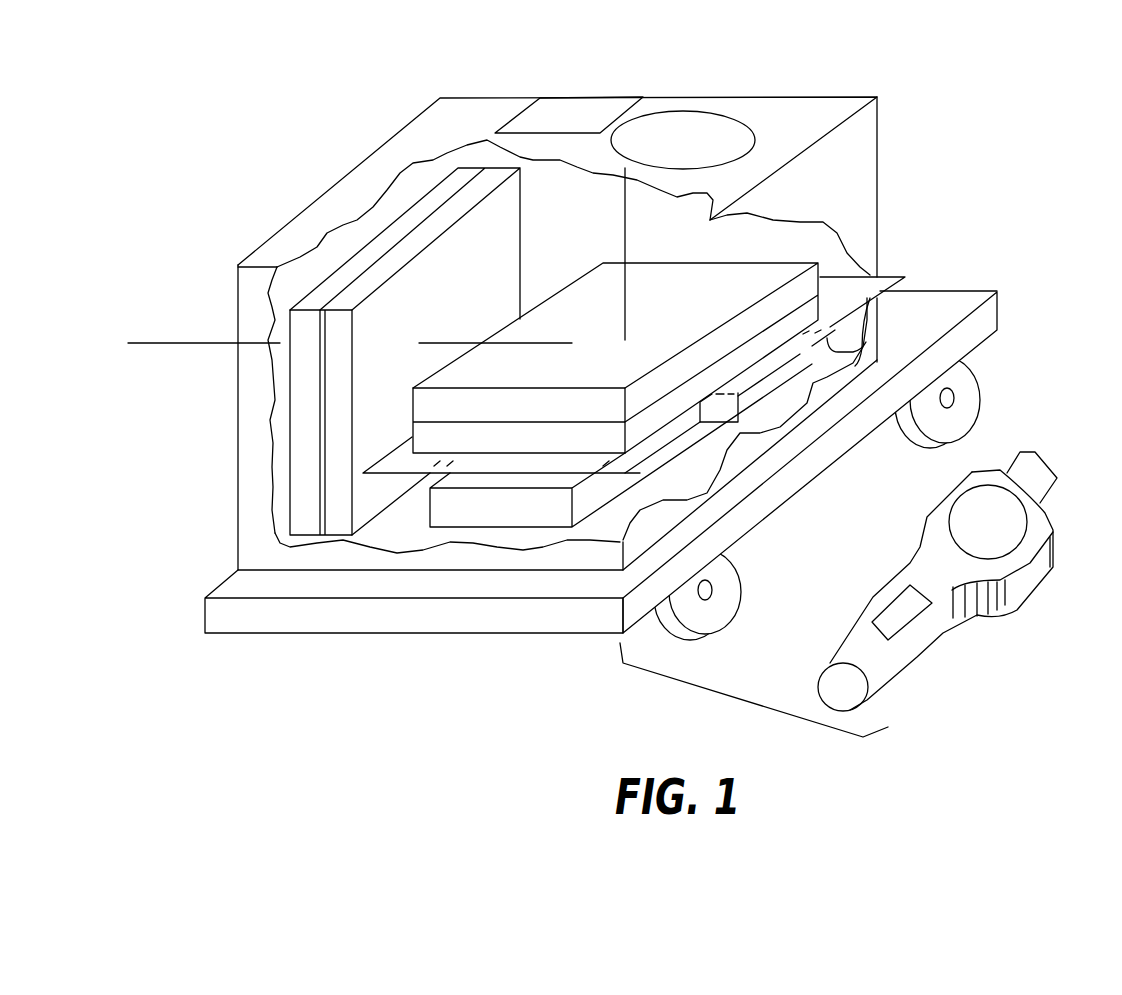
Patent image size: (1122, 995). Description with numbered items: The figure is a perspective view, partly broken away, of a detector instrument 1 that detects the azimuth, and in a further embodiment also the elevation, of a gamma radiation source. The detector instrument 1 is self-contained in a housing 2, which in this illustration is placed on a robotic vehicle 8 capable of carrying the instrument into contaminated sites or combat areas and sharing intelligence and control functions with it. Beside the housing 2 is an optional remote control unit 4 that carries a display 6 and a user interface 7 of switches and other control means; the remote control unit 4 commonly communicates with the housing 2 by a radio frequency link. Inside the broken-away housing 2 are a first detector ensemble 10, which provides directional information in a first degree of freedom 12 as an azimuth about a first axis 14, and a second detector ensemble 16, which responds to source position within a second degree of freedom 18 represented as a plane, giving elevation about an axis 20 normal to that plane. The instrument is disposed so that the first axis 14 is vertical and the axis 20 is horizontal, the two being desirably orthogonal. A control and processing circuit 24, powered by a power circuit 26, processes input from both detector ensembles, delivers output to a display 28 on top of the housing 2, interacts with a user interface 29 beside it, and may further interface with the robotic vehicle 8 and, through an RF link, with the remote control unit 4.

The detector instrument 1 is at (962, 124).
The housing 2 is at (877, 190).
The remote control unit 4 is at (965, 581).
The display 6 is at (1017, 517).
The user interface 7 is at (905, 618).
The robotic vehicle 8 is at (628, 602).
The first detector ensemble 10 is at (597, 287).
The first degree of freedom 12 is at (395, 463).
The first axis 14 is at (625, 207).
The second detector ensemble 16 is at (510, 237).
The second degree of freedom 18 is at (275, 437).
The axis 20 is at (166, 344).
The control and processing circuit 24 is at (660, 456).
The power circuit 26 is at (868, 332).
The display 28 is at (690, 125).
The user interface 29 is at (582, 112).